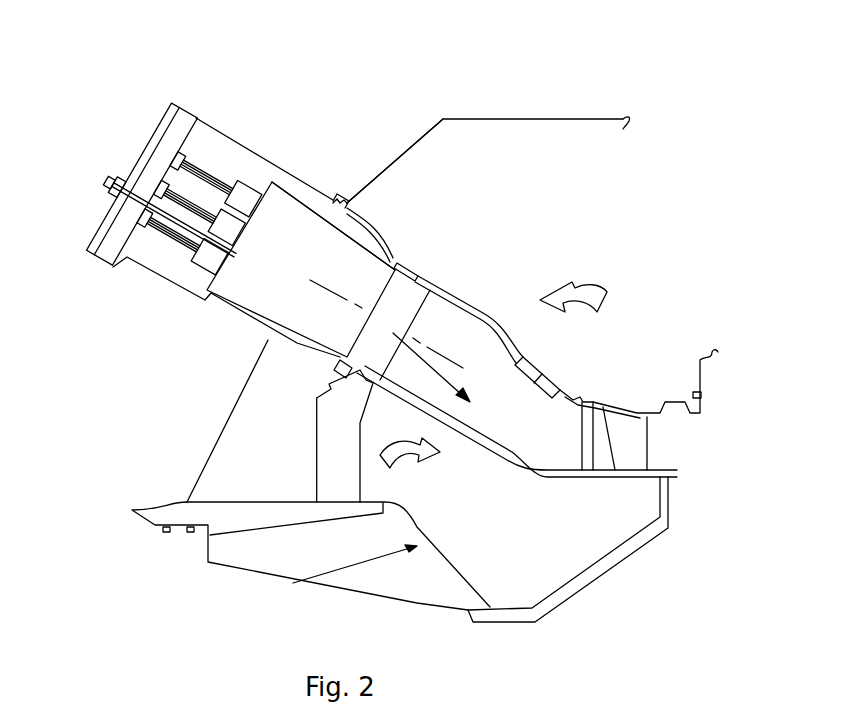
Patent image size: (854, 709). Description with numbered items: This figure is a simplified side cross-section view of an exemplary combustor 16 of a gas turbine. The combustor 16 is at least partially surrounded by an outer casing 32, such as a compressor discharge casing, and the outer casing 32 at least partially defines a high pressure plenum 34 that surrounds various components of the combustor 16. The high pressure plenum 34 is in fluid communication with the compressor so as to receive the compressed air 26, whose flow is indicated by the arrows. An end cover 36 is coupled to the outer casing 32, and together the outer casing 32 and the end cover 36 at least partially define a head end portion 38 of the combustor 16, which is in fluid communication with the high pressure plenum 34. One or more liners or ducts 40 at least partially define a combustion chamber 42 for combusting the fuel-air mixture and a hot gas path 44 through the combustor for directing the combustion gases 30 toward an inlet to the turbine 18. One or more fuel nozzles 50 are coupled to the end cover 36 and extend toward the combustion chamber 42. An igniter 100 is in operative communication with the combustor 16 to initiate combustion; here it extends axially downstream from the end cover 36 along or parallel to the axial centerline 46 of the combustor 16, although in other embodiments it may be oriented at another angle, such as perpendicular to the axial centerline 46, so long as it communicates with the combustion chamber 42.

The combustor 16 is at (468, 87).
The turbine 18 is at (677, 450).
The compressed air 26 is at (578, 297).
The combustion gases 30 is at (450, 390).
The outer casing 32 is at (418, 142).
The high pressure plenum 34 is at (585, 203).
The end cover 36 is at (105, 262).
The head end portion 38 is at (162, 267).
The liner or duct 40 is at (360, 227).
The combustion chamber 42 is at (292, 268).
The hot gas path 44 is at (443, 330).
The axial centerline 46 is at (346, 302).
The fuel nozzle 50 is at (243, 195).
The igniter 100 is at (118, 162).